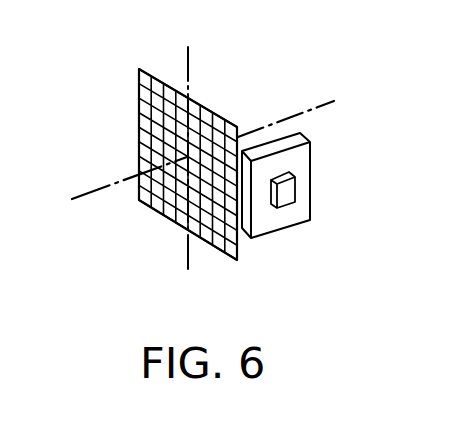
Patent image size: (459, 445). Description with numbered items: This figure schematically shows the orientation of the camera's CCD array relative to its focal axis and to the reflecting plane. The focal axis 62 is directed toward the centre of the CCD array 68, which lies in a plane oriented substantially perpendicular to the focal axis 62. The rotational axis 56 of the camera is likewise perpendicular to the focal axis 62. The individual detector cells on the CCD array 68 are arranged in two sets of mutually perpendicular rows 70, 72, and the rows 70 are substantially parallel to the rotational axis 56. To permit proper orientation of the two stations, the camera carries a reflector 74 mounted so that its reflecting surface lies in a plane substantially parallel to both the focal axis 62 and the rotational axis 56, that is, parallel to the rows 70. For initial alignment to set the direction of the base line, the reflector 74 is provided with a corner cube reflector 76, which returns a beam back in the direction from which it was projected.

The rotational axis 56 is at (189, 67).
The focal axis 62 is at (307, 110).
The CCD array 68 is at (146, 69).
The rows 70 is at (195, 237).
The rows 72 is at (139, 152).
The reflector 74 is at (313, 155).
The corner cube reflector 76 is at (292, 194).